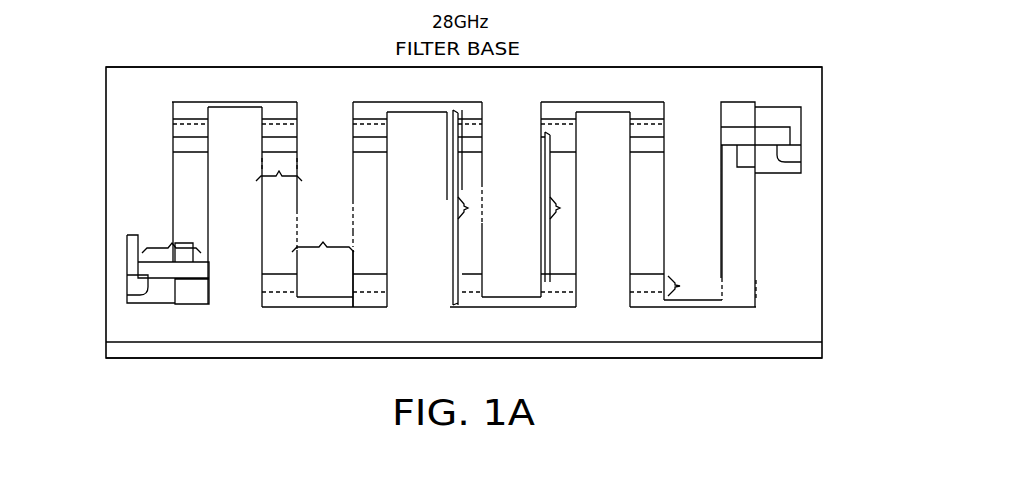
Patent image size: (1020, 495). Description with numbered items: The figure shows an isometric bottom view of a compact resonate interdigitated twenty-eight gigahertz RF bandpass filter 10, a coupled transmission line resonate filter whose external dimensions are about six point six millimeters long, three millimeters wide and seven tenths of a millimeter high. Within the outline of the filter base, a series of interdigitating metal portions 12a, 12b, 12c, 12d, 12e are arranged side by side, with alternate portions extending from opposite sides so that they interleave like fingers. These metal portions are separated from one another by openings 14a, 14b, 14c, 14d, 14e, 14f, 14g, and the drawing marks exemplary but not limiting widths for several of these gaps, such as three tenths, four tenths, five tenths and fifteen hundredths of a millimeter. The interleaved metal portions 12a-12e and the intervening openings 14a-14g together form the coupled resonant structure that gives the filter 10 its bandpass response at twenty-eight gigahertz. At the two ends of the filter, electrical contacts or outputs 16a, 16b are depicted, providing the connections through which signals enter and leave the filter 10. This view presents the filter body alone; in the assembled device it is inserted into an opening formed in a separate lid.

The RF bandpass filter 10 is at (841, 124).
The interdigitating metal portion 12a is at (224, 120).
The interdigitating metal portion 12b is at (317, 283).
The interdigitating metal portion 12c is at (412, 125).
The interdigitating metal portion 12d is at (598, 120).
The interdigitating metal portion 12e is at (688, 297).
The opening 14a is at (192, 137).
The opening 14b is at (285, 137).
The opening 14c is at (374, 279).
The opening 14d is at (472, 137).
The opening 14e is at (567, 280).
The opening 14f is at (645, 137).
The opening 14g is at (737, 230).
The electrical contact 16a is at (105, 320).
The electrical contact 16b is at (825, 270).